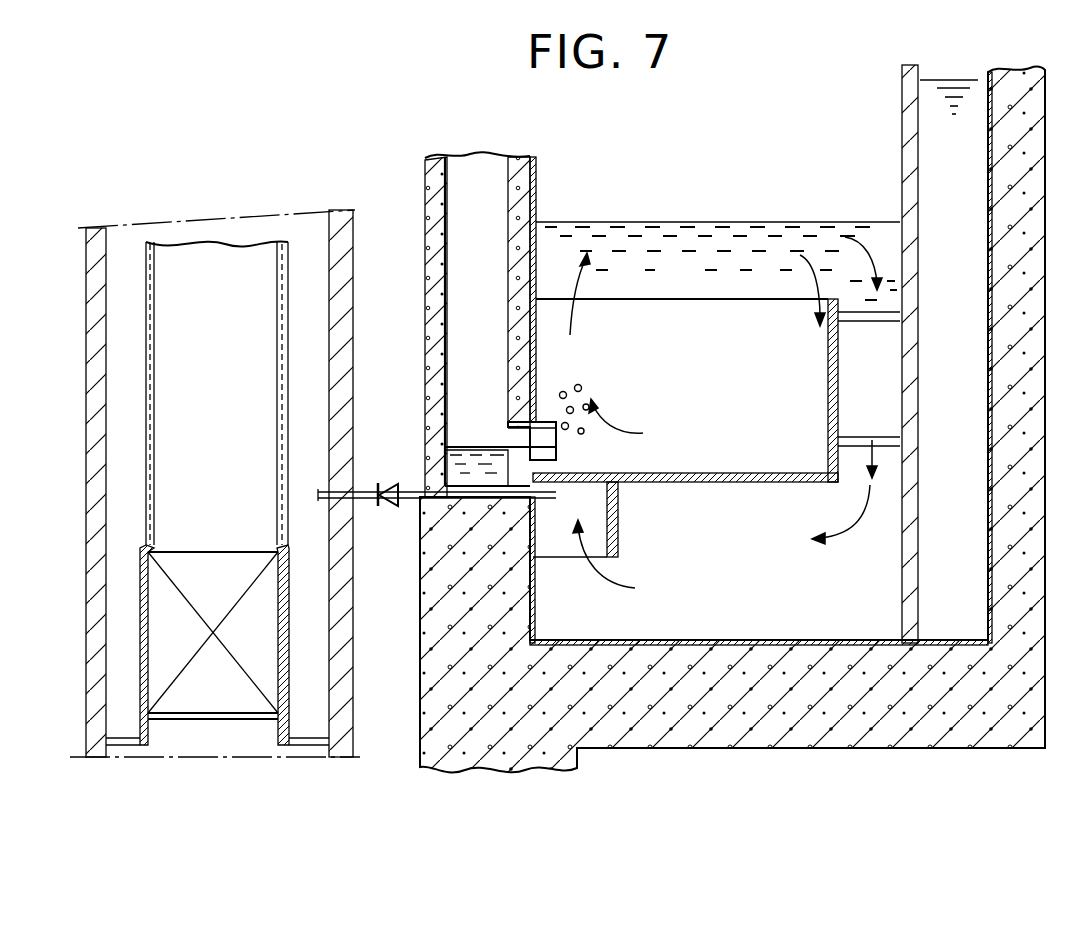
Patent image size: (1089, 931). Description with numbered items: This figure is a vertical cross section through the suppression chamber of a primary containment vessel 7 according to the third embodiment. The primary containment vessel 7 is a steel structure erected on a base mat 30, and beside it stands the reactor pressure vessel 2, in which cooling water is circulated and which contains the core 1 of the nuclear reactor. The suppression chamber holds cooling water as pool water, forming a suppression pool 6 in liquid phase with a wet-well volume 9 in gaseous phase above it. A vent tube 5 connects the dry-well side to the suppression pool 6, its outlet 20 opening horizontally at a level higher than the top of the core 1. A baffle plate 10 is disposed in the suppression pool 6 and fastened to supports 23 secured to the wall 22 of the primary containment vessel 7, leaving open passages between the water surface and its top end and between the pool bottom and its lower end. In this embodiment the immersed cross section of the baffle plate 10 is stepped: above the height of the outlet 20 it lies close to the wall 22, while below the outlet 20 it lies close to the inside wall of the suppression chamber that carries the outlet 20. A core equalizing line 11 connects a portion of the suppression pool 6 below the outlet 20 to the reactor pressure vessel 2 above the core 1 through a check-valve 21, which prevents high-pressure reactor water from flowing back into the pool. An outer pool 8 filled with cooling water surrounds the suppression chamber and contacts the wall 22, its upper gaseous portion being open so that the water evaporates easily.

The core 1 is at (263, 632).
The reactor pressure vessel 2 is at (356, 282).
The vent tube 5 is at (474, 175).
The suppression pool 6 is at (663, 622).
The primary containment vessel 7 is at (922, 104).
The outer pool 8 is at (930, 202).
The wet-well volume 9 is at (727, 185).
The baffle plate 10 is at (793, 483).
The core equalizing line 11 is at (358, 505).
The outlet 20 is at (512, 438).
The check-valve 21 is at (386, 506).
The wall 22 is at (917, 572).
The supports 23 is at (878, 312).
The base mat 30 is at (787, 722).